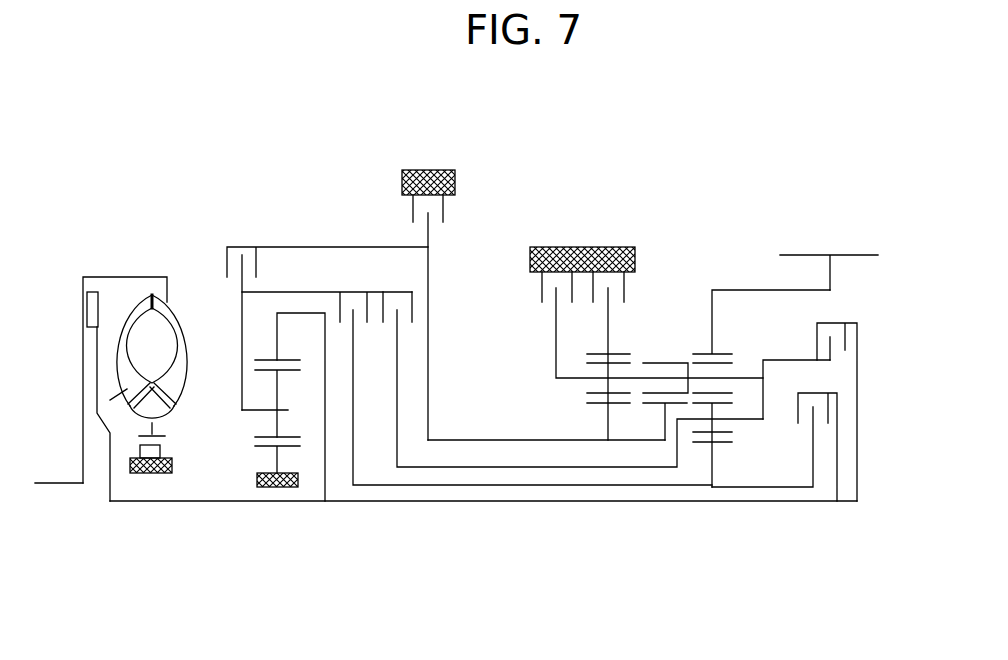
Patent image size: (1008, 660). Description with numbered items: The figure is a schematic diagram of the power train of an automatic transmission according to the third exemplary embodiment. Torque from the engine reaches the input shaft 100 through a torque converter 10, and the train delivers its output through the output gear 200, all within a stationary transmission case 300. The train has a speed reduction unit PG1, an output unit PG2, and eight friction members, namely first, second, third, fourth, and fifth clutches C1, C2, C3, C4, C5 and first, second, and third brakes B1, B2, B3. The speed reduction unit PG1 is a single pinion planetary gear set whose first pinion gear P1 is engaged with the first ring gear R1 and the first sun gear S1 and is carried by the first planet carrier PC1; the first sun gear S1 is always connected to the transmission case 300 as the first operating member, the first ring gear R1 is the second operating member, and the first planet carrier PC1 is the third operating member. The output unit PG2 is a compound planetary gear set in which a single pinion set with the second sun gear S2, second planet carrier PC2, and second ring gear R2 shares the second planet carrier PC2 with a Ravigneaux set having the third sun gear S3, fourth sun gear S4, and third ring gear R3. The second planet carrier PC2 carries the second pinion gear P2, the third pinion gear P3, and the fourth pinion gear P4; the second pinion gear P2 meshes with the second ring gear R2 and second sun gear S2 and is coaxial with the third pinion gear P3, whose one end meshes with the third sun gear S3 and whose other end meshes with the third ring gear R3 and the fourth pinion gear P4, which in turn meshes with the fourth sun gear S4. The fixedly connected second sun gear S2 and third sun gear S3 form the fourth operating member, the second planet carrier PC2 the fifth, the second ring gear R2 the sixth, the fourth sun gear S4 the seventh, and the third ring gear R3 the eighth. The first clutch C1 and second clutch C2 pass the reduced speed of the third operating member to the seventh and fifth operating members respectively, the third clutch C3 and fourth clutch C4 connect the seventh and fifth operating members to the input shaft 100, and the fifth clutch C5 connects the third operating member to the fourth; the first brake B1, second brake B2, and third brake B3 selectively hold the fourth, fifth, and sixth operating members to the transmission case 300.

The torque converter 10 is at (173, 313).
The input shaft 100 is at (207, 501).
The output gear 200 is at (868, 273).
The transmission case 300 is at (427, 170).
The speed reduction unit PG1 is at (270, 448).
The output unit PG2 is at (629, 430).
The first clutch C1 is at (477, 377).
The second clutch C2 is at (573, 368).
The third clutch C3 is at (774, 436).
The fourth clutch C4 is at (841, 397).
The fifth clutch C5 is at (327, 314).
The first brake B1 is at (413, 317).
The second brake B2 is at (637, 325).
The third brake B3 is at (624, 356).
The first sun gear S1 is at (259, 459).
The first planet carrier PC1 is at (254, 423).
The first ring gear R1 is at (270, 334).
The first pinion gear P1 is at (280, 403).
The second sun gear S2 is at (546, 430).
The second planet carrier PC2 is at (574, 397).
The second ring gear R2 is at (600, 329).
The second pinion gear P2 is at (595, 367).
The third ring gear R3 is at (761, 323).
The third pinion gear P3 is at (687, 366).
The third sun gear S3 is at (662, 423).
The fourth sun gear S4 is at (732, 453).
The fourth pinion gear P4 is at (726, 443).